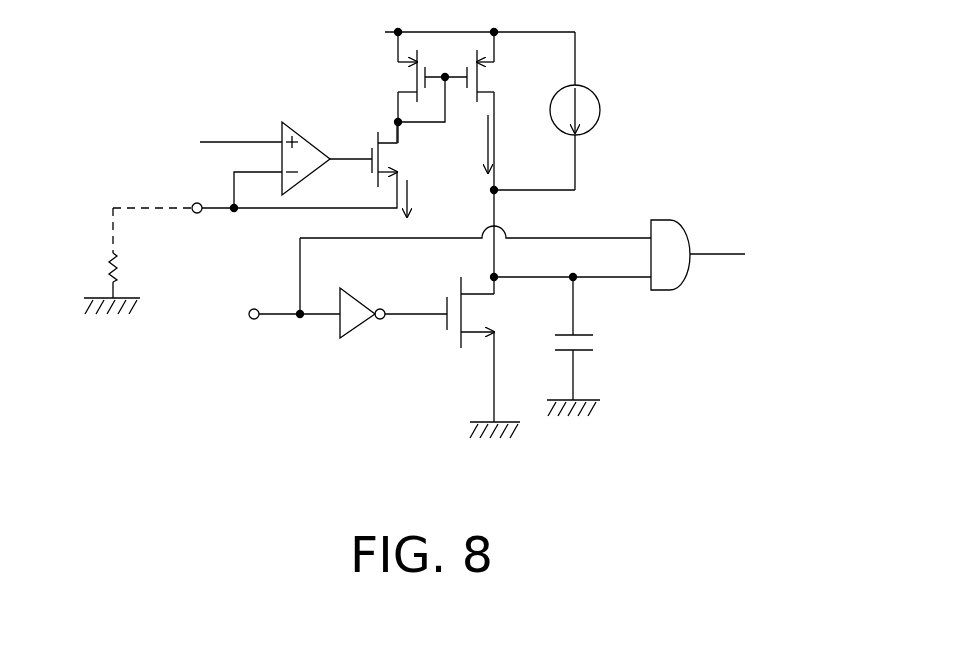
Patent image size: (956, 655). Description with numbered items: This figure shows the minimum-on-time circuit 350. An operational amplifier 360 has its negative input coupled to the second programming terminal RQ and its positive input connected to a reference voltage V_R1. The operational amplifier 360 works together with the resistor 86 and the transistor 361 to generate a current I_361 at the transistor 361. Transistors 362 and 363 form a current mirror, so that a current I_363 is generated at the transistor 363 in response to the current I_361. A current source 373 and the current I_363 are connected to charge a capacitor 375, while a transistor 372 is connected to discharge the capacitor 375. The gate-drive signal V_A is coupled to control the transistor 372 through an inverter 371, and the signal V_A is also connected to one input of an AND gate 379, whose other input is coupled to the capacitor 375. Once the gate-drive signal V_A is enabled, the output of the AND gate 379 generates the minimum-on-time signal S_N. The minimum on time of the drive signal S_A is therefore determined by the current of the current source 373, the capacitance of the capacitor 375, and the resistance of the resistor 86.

The minimum-on-time circuit 350 is at (808, 128).
The operational amplifier 360 is at (282, 128).
The transistor 361 is at (406, 154).
The transistor 362 is at (412, 67).
The transistor 363 is at (504, 67).
The inverter 371 is at (357, 331).
The transistor 372 is at (459, 338).
The current source 373 is at (597, 111).
The capacitor 375 is at (603, 343).
The AND gate 379 is at (675, 270).
The resistor 86 is at (115, 261).